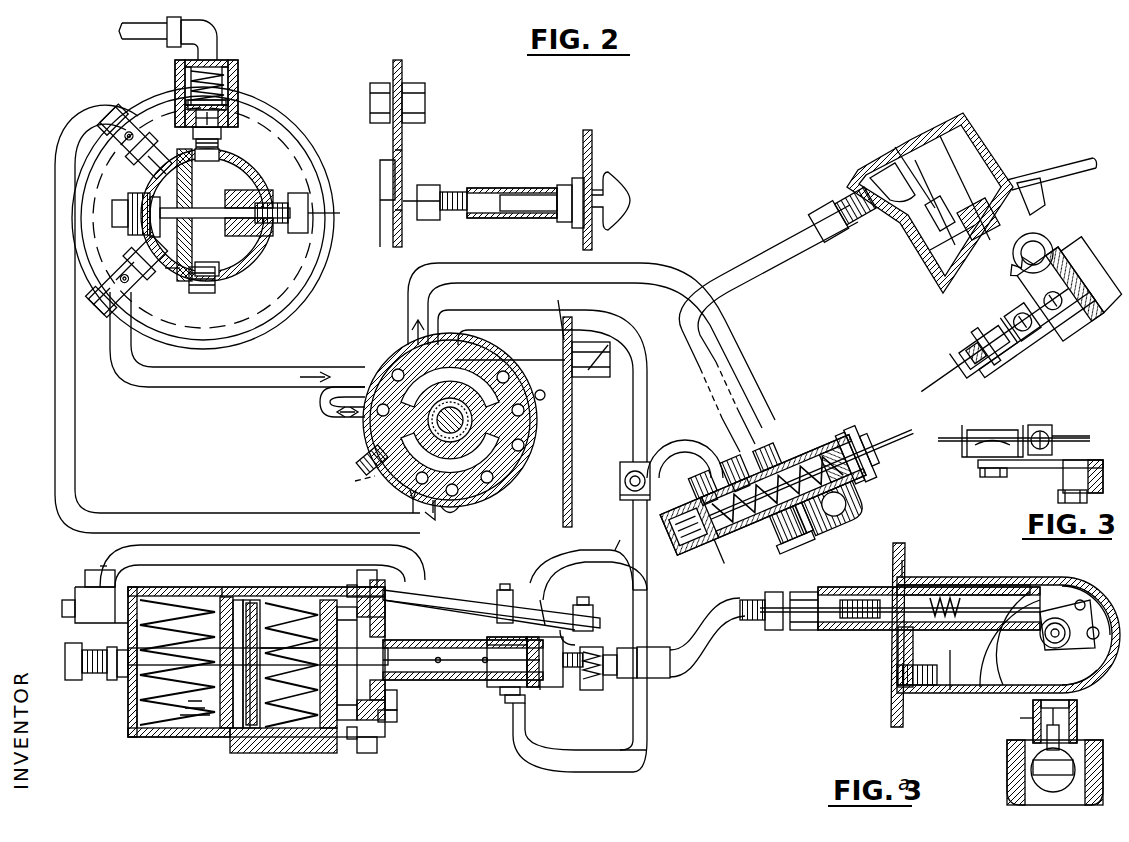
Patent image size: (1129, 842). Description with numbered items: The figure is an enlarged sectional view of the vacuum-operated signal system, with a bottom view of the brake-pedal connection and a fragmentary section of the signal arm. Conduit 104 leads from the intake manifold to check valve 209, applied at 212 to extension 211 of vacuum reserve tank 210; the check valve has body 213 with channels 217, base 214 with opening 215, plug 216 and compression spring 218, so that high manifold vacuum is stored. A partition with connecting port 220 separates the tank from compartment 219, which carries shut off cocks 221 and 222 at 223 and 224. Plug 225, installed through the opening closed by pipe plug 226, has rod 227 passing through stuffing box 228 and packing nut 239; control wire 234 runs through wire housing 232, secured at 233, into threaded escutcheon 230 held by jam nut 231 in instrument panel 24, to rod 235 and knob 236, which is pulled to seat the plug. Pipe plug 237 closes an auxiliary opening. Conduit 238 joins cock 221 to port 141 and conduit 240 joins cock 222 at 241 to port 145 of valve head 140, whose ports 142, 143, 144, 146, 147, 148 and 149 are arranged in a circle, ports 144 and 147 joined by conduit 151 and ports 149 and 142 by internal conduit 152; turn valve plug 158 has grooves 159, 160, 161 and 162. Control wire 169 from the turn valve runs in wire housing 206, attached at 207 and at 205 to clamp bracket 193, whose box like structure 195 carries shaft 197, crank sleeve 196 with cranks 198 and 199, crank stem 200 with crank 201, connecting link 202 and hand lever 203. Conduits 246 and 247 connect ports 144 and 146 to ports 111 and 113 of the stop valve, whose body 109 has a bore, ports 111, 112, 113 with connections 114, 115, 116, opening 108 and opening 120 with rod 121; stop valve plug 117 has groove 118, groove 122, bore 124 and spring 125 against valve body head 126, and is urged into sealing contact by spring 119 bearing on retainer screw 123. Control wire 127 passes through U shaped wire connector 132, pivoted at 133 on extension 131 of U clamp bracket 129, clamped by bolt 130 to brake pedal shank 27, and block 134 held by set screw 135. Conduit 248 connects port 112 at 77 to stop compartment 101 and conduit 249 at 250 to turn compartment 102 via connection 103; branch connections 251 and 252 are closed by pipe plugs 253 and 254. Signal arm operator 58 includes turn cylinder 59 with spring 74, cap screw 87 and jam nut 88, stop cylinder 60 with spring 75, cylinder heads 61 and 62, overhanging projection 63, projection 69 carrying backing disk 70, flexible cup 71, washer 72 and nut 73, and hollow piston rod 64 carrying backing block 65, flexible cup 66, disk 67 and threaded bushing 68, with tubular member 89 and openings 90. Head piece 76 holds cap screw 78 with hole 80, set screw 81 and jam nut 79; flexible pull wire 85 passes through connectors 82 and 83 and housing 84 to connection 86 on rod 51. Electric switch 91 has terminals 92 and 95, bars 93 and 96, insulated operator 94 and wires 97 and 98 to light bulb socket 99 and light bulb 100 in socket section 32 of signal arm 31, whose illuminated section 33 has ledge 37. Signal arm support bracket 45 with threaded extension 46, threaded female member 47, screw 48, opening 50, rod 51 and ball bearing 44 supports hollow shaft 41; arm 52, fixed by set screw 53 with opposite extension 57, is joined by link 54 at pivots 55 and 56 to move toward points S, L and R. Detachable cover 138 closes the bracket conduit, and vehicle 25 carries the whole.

In FIG. 2, the conduit 104 is at (128, 31).
In FIG. 2, the vertically extending channels 217 is at (178, 85).
In FIG. 2, the opening 215 is at (175, 92).
In FIG. 2, the body 213 is at (214, 78).
In FIG. 2, the compression spring 218 is at (226, 82).
In FIG. 2, the base 214 is at (222, 105).
In FIG. 2, the check valve 209 is at (215, 64).
In FIG. 2, the plug 216 is at (200, 114).
In FIG. 2, the threaded connection 212 is at (223, 131).
In FIG. 2, the vacuum reserve tank 210 is at (303, 145).
In FIG. 2, the connecting port 220 is at (194, 226).
In FIG. 2, the compartment 219 is at (192, 174).
In FIG. 2, the plug 225 is at (183, 204).
In FIG. 2, the pipe plug 226 is at (112, 212).
In FIG. 2, the stuffing box 228 is at (248, 258).
In FIG. 2, the packing nut 239 is at (100, 111).
In FIG. 2, the rod 227 is at (298, 193).
In FIG. 2, the pipe plug 237 is at (200, 293).
In FIG. 2, the extension 211 is at (176, 278).
In FIG. 2, the shut off cock 221 is at (125, 155).
In FIG. 2, the threaded opening connection 223 is at (148, 168).
In FIG. 2, the threaded opening connection 224 is at (133, 256).
In FIG. 2, the shut off cock 222 is at (118, 272).
In FIG. 2, the connection 241 is at (103, 296).
In FIG. 2, the conduit 240 is at (250, 384).
In FIG. 2, the conduit 238 is at (250, 528).
In FIG. 2, the motor vehicle 25 is at (404, 66).
In FIG. 2, the control wire 234 is at (343, 158).
In FIG. 2, the compression male connector, sleeve and nut assembly 233 is at (417, 186).
In FIG. 2, the wire housing 232 is at (453, 212).
In FIG. 2, the threaded escutcheon 230 is at (476, 188).
In FIG. 2, the rod 235 is at (525, 195).
In FIG. 2, the jam nut 231 is at (568, 185).
In FIG. 2, the instrument panel 24 is at (586, 130).
In FIG. 2, the knob 236 is at (610, 172).
In FIG. 2, the control wire 169 is at (558, 300).
In FIG. 2, the port 145 is at (380, 356).
In FIG. 2, the port 146 is at (440, 333).
In FIG. 2, the port 144 is at (385, 430).
In FIG. 2, the valve head 140 is at (370, 442).
In FIG. 2, the port 143 is at (350, 459).
In FIG. 2, the conduit 151 is at (330, 398).
In FIG. 2, the elongated groove 159 is at (355, 481).
In FIG. 2, the port 142 is at (400, 476).
In FIG. 2, the elongated groove 160 is at (405, 343).
In FIG. 2, the port 147 is at (555, 393).
In FIG. 2, the elongated groove 161 is at (550, 422).
In FIG. 2, the port 148 is at (545, 450).
In FIG. 2, the turn valve plug 158 is at (540, 478).
In FIG. 2, the elongated groove 162 is at (490, 480).
In FIG. 2, the port 149 is at (480, 490).
In FIG. 2, the internal conduit 152 is at (470, 505).
In FIG. 2, the port 141 is at (460, 510).
In FIG. 2, the conduit 246 is at (530, 278).
In FIG. 2, the conduit 247 is at (530, 306).
In FIG. 2, the connection 207 is at (608, 345).
In FIG. 2, the branch connection 251 is at (620, 482).
In FIG. 2, the pipe plug 253 is at (620, 500).
In FIG. 2, the wire housing 206 is at (750, 241).
In FIG. 2, the compression male connector, sleeve and nut assembly 205 is at (828, 212).
In FIG. 2, the clamp bracket 193 is at (960, 113).
In FIG. 2, the shaft 197 is at (905, 140).
In FIG. 2, the crank sleeve 196 is at (888, 153).
In FIG. 2, the crank 199 is at (950, 146).
In FIG. 2, the crank 198 is at (965, 172).
In FIG. 2, the operating hand lever 203 is at (1083, 157).
In FIG. 2, the connecting link 202 is at (930, 213).
In FIG. 2, the crank 201 is at (938, 232).
In FIG. 2, the box like structure 195 is at (932, 283).
In FIG. 2, the crank stem 200 is at (1013, 266).
In FIG. 2, the control wire 127 is at (979, 319).
In FIG. 3, the control wire 127 is at (943, 440).
In FIG. 2, the pivot 133 is at (984, 348).
In FIG. 3, the pivot 133 is at (1000, 450).
In FIG. 2, the U shaped wire connector 132 is at (984, 347).
In FIG. 3, the U shaped wire connector 132 is at (993, 428).
In FIG. 2, the set screw 135 is at (1022, 322).
In FIG. 3, the set screw 135 is at (1045, 425).
In FIG. 2, the extension 131 is at (1037, 335).
In FIG. 3, the extension 131 is at (1030, 468).
In FIG. 2, the bolt 130 is at (1055, 290).
In FIG. 3, the bolt 130 is at (1075, 462).
In FIG. 2, the U clamp bracket 129 is at (1052, 300).
In FIG. 2, the block 134 is at (985, 346).
In FIG. 2, the brake pedal shank 27 is at (1092, 275).
In FIG. 3, the brake pedal shank 27 is at (1080, 437).
In FIG. 2, the detachable cover 138 is at (763, 495).
In FIG. 2, the body 109 is at (688, 526).
In FIG. 2, the elongated groove 118 is at (777, 489).
In FIG. 2, the port 111 is at (811, 475).
In FIG. 2, the port 113 is at (702, 484).
In FIG. 2, the port 112 is at (735, 470).
In FIG. 2, the conduit connection 114 is at (767, 457).
In FIG. 2, the conduit connection 116 is at (709, 499).
In FIG. 2, the conduit connection 115 is at (741, 485).
In FIG. 2, the valve body head 126 is at (835, 464).
In FIG. 2, the stop valve plug 117 is at (850, 458).
In FIG. 2, the compression spring 125 is at (860, 454).
In FIG. 2, the bore 124 is at (869, 450).
In FIG. 2, the opening 108 is at (834, 508).
In FIG. 2, the rod 121 is at (833, 503).
In FIG. 2, the groove 122 is at (802, 518).
In FIG. 2, the opening 120 is at (787, 524).
In FIG. 2, the retainer screw 123 is at (796, 542).
In FIG. 2, the compression spring 119 is at (719, 552).
In FIG. 2, the conduit 249 is at (250, 553).
In FIG. 2, the connection 250 is at (100, 566).
In FIG. 2, the pipe plug 254 is at (85, 576).
In FIG. 2, the branch connection 252 is at (62, 601).
In FIG. 2, the conduit connection 103 is at (95, 606).
In FIG. 2, the signal arm operator 58 is at (370, 745).
In FIG. 2, the cap screw 87 is at (70, 680).
In FIG. 2, the jam nut 88 is at (110, 680).
In FIG. 2, the turn compartment 102 is at (148, 735).
In FIG. 2, the compression spring 74 is at (165, 720).
In FIG. 2, the turn cylinder 59 is at (195, 720).
In FIG. 2, the backing disk 70 is at (238, 728).
In FIG. 2, the nut 73 is at (228, 728).
In FIG. 2, the washer 72 is at (222, 601).
In FIG. 2, the flexible cup 71 is at (222, 588).
In FIG. 2, the projection 69 is at (250, 600).
In FIG. 2, the compression spring 75 is at (275, 727).
In FIG. 2, the stop compartment 101 is at (278, 600).
In FIG. 2, the tubular member 89 is at (306, 600).
In FIG. 2, the stop cylinder 60 is at (325, 728).
In FIG. 2, the disk 67 is at (335, 728).
In FIG. 2, the backing block 65 is at (350, 740).
In FIG. 2, the flexible cup 66 is at (355, 600).
In FIG. 2, the threaded bushing 68 is at (394, 630).
In FIG. 2, the cylinder head 61 is at (385, 698).
In FIG. 2, the cylinder head 62 is at (385, 720).
In FIG. 2, the openings 90 is at (438, 680).
In FIG. 2, the hollow piston rod 64 is at (465, 680).
In FIG. 2, the head piece 76 is at (495, 690).
In FIG. 2, the jam nut 79 is at (555, 690).
In FIG. 2, the bar of metal 96 is at (570, 667).
In FIG. 2, the set screw 81 is at (592, 690).
In FIG. 2, the flexible pull wire 85 is at (600, 690).
In FIG. 2, the compression male connector, sleeve and nut assembly 82 is at (630, 680).
In FIG. 2, the housing 84 is at (690, 678).
In FIG. 2, the cap screw 78 is at (640, 613).
In FIG. 2, the conduit connection 77 is at (517, 700).
In FIG. 2, the conduit 248 is at (620, 768).
In FIG. 2, the insulated operator 94 is at (540, 690).
In FIG. 2, the overhanging projection 63 is at (425, 598).
In FIG. 2, the hole 80 is at (500, 608).
In FIG. 2, the terminal 92 is at (503, 588).
In FIG. 2, the terminal 95 is at (583, 603).
In FIG. 2, the electric switch 91 is at (560, 630).
In FIG. 2, the bar of spring bronze or brass 93 is at (540, 600).
In FIG. 2, the electric wire 98 is at (565, 590).
In FIG. 3A, the electric wire 98 is at (1040, 729).
In FIG. 2, the electric wire 97 is at (615, 550).
In FIG. 2, the compression male connector, sleeve and nut assembly 83 is at (772, 632).
In FIG. 2, the threaded female member 47 is at (877, 590).
In FIG. 2, the threaded extension 46 is at (870, 630).
In FIG. 2, the rod 51 is at (963, 605).
In FIG. 2, the connection 86 is at (905, 595).
In FIG. 2, the stop position point S is at (1020, 588).
In FIG. 2, the screw 48 is at (897, 680).
In FIG. 2, the hollow shaft 41 is at (1055, 618).
In FIG. 2, the pivot 56 is at (1080, 600).
In FIG. 2, the link 54 is at (1110, 620).
In FIG. 2, the opposite extension 57 is at (1040, 623).
In FIG. 2, the ball bearing 44 is at (1040, 645).
In FIG. 2, the arm 52 is at (1090, 638).
In FIG. 2, the pivot 55 is at (1092, 666).
In FIG. 2, the set screw 53 is at (1020, 718).
In FIG. 2, the signal arm support bracket 45 is at (950, 690).
In FIG. 2, the opening 50 is at (902, 575).
In FIG. 2, the right turn position point R is at (990, 595).
In FIG. 2, the left turn position point L is at (1003, 595).
In FIG. 3A, the signal arm 31 is at (1077, 712).
In FIG. 3A, the socket section 32 is at (1077, 728).
In FIG. 3A, the light bulb socket 99 is at (1045, 736).
In FIG. 3A, the light bulb 100 is at (1033, 763).
In FIG. 3A, the ledge 37 is at (1032, 776).
In FIG. 3A, the illuminated section 33 is at (1010, 797).